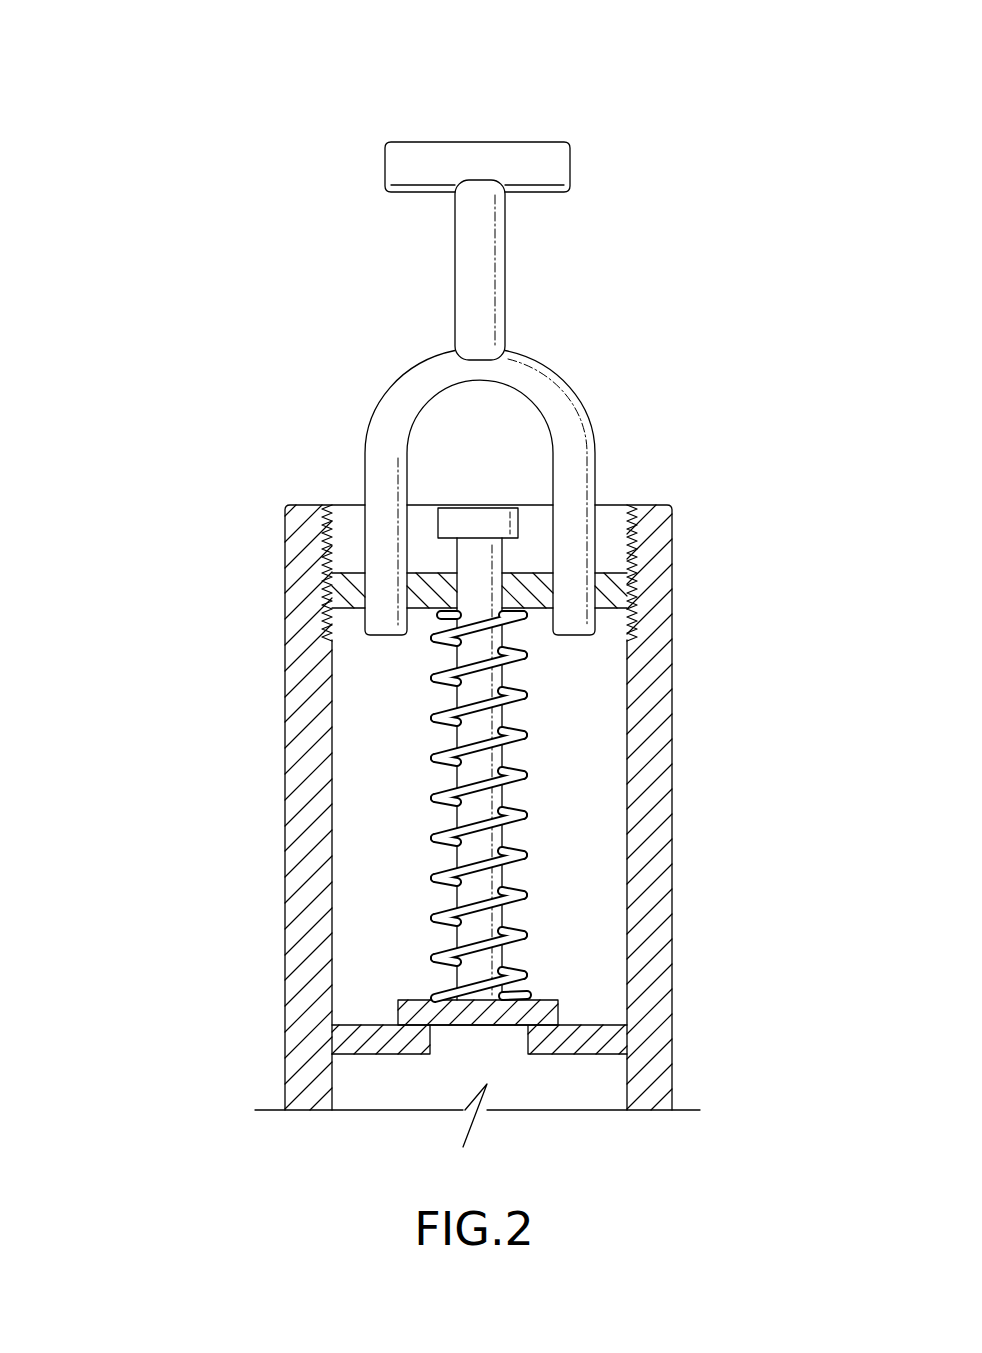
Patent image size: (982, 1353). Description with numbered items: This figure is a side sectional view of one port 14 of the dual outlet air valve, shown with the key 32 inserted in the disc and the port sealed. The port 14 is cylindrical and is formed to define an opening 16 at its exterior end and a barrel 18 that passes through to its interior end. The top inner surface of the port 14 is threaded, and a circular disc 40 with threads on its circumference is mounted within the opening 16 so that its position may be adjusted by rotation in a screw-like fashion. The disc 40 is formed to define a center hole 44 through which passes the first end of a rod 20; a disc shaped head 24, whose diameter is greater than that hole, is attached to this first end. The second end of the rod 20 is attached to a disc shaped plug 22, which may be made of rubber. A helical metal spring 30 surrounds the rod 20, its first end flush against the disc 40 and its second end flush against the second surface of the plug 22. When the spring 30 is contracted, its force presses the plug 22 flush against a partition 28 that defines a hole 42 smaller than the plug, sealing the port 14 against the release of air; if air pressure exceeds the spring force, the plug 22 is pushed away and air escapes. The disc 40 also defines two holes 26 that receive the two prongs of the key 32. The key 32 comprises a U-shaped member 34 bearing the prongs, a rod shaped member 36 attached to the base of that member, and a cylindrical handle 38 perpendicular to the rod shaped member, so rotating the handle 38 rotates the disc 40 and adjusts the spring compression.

The port 14 is at (672, 670).
The opening 16 is at (610, 525).
The barrel 18 is at (363, 810).
The rod 20 is at (475, 575).
The plug 22 is at (560, 1000).
The disc shaped head 24 is at (487, 523).
The holes 26 is at (435, 717).
The partition 28 is at (603, 1035).
The spring 30 is at (527, 740).
The key 32 is at (505, 293).
The U-shaped member 34 is at (420, 386).
The rod shaped member 36 is at (482, 262).
The cylindrical handle 38 is at (489, 160).
The disc 40 is at (345, 587).
The hole 42 is at (432, 1073).
The center hole 44 is at (507, 575).